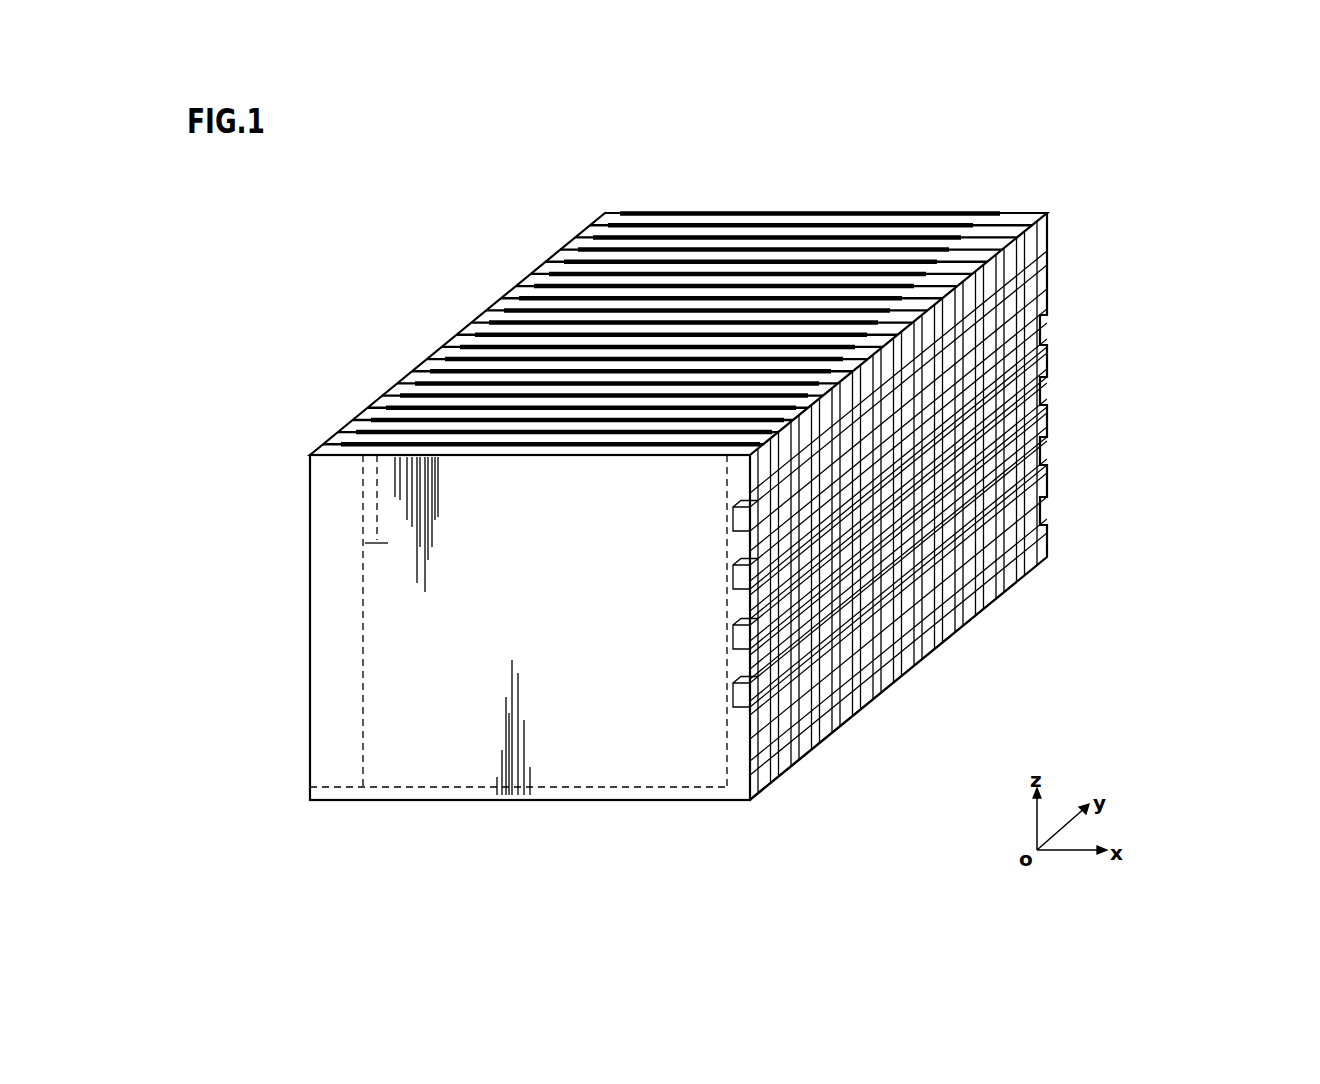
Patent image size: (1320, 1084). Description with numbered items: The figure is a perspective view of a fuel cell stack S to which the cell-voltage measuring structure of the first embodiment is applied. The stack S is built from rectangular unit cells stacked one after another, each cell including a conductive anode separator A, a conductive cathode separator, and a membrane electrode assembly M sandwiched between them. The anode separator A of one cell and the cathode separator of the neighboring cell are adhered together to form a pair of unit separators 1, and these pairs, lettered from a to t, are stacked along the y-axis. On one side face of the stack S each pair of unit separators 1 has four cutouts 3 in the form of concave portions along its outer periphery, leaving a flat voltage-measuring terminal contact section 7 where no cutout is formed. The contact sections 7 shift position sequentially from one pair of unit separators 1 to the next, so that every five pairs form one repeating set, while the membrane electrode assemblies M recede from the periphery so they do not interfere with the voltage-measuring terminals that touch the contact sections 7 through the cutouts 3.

The pair of unit separators 1 is at (627, 212).
The cutout 3 is at (773, 720).
The voltage-measuring terminal contact section 7 is at (838, 688).
The membrane electrode assembly M is at (712, 225).
The fuel cell stack S is at (828, 195).
The anode separator A is at (1205, 405).